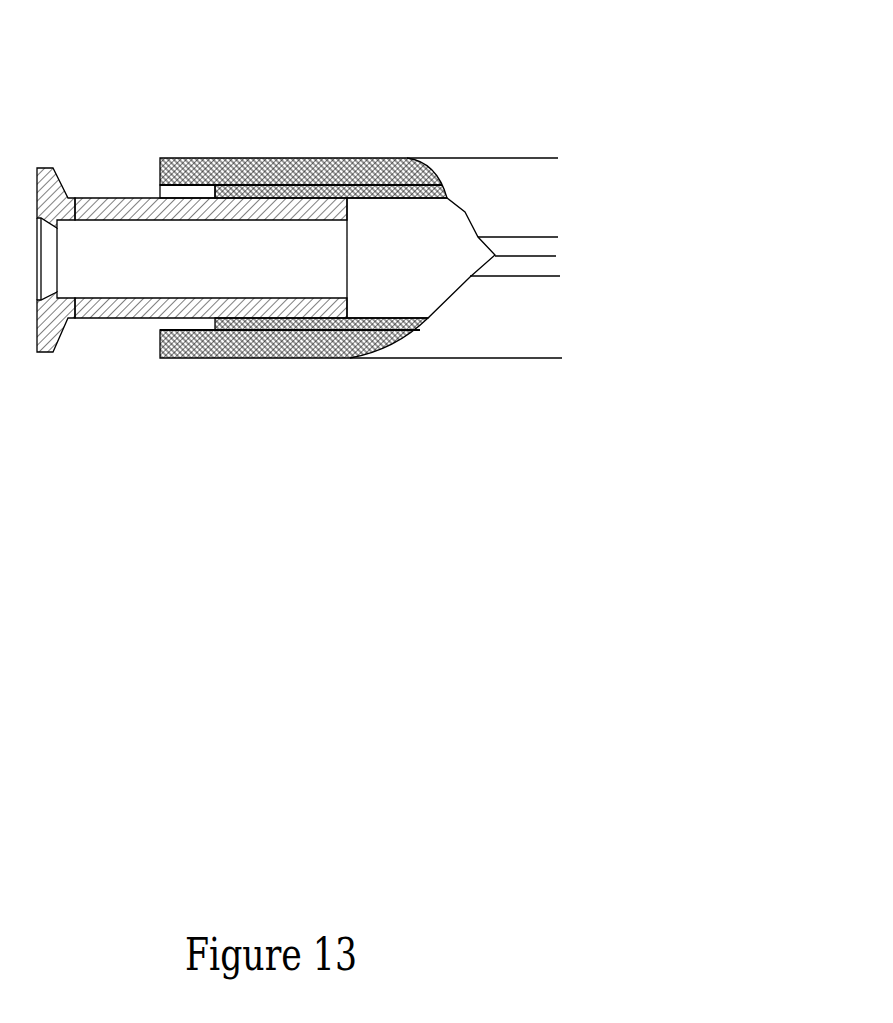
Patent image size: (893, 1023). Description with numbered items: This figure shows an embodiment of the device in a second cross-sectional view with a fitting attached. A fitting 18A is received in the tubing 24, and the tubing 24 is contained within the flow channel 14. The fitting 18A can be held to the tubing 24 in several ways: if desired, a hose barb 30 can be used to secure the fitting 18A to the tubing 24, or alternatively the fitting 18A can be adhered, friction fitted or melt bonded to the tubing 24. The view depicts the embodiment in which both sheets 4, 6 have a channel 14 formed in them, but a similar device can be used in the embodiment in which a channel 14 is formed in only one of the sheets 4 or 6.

The fitting 18A is at (60, 198).
The flow channel 14 is at (177, 195).
The sheet 4 is at (243, 157).
The hose barb 30 is at (280, 310).
The tubing 24 is at (363, 316).
The sheet 6 is at (220, 362).